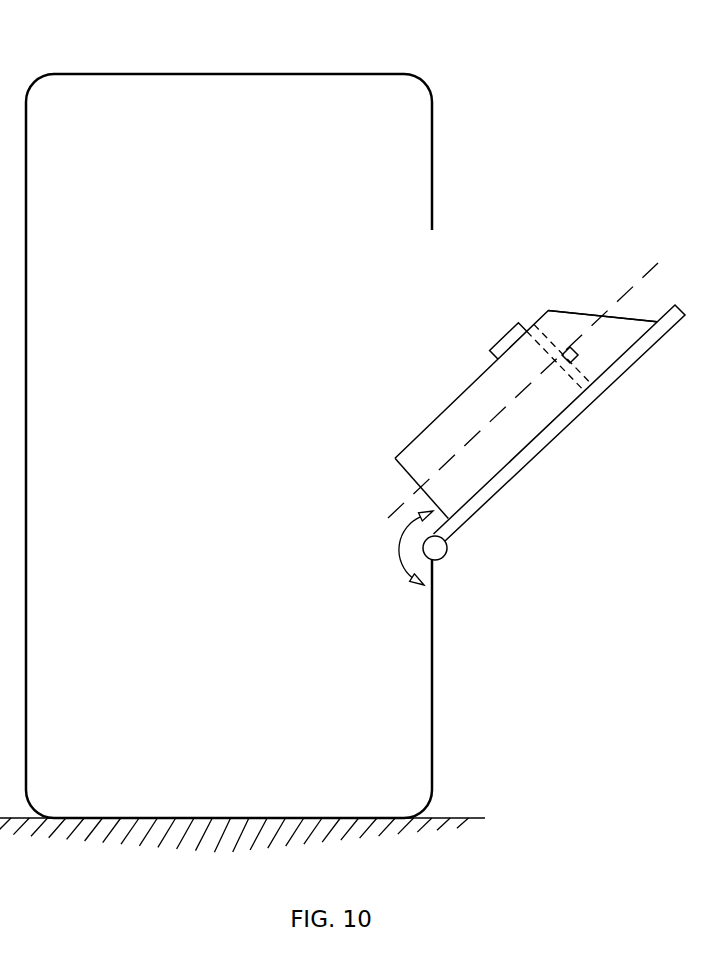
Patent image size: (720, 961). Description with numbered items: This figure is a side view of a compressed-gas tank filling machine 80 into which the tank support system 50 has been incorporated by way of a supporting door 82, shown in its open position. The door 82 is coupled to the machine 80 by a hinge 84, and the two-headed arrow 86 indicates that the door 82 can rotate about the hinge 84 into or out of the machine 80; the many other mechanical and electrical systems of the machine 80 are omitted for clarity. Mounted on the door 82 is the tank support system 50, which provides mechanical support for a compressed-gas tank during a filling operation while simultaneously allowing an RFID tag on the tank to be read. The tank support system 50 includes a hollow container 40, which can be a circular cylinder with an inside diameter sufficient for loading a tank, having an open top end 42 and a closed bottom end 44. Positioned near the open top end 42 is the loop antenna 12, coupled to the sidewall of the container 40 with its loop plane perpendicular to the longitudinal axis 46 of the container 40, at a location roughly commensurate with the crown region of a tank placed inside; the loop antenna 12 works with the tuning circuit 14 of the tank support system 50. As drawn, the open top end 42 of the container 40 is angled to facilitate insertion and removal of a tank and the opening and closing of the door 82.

The compressed-gas tank filling machine 80 is at (373, 73).
The door 82 is at (522, 468).
The hinge 84 is at (440, 550).
The two-headed arrow 86 is at (402, 562).
The tank support system 50 is at (514, 309).
The hollow container 40 is at (465, 410).
The open end 42 is at (583, 313).
The closed end 44 is at (396, 462).
The longitudinal axis 46 is at (385, 512).
The tuning circuit 14 is at (504, 336).
The loop antenna 12 is at (555, 333).